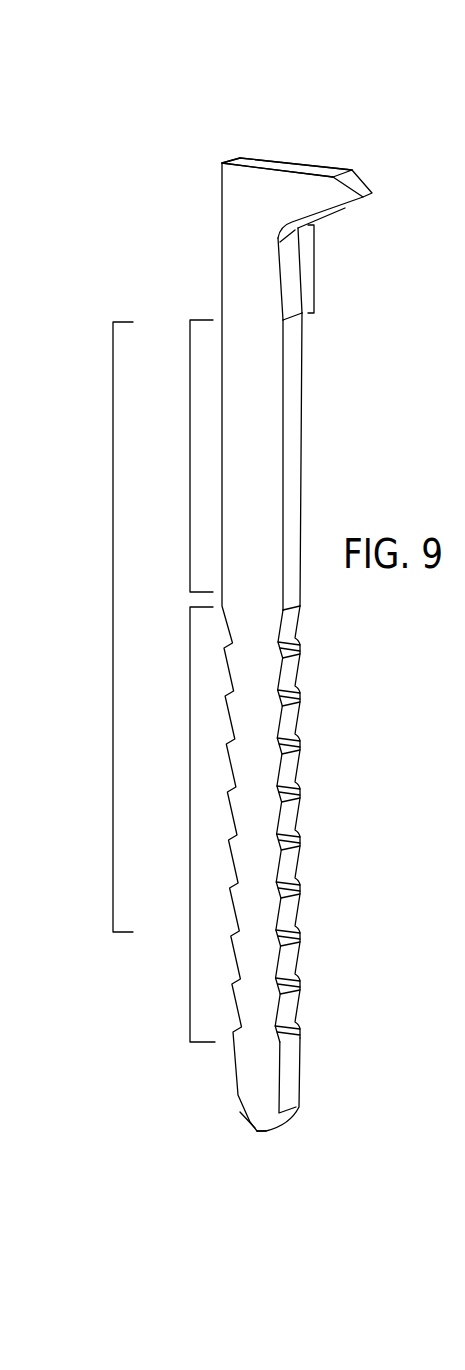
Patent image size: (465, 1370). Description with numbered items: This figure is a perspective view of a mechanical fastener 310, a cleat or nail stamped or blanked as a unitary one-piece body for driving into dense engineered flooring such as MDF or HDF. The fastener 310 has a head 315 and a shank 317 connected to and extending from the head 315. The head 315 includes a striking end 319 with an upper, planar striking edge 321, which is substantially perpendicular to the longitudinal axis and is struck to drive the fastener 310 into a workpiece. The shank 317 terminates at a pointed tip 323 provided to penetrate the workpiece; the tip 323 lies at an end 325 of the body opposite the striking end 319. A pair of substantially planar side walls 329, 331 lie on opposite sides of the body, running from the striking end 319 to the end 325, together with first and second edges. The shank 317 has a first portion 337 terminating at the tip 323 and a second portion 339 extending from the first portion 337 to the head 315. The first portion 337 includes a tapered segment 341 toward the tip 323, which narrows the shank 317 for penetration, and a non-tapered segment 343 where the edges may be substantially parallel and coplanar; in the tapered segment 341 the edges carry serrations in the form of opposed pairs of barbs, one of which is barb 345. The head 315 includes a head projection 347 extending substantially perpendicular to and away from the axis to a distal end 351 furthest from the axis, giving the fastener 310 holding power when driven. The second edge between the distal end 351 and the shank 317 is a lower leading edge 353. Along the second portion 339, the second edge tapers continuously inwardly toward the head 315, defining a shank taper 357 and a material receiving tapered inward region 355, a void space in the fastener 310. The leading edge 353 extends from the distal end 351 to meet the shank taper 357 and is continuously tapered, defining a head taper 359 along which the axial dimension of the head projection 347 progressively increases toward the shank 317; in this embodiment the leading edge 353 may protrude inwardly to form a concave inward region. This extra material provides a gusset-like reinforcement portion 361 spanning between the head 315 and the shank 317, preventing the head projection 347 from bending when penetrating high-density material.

The mechanical fastener 310 is at (124, 170).
The head 315 is at (240, 177).
The shank 317 is at (255, 445).
The striking end 319 is at (279, 121).
The striking edge 321 is at (290, 165).
The pointed tip 323 is at (250, 1122).
The end 325 is at (253, 1149).
The side wall 329 is at (262, 343).
The side wall 331 is at (300, 389).
The first portion 337 is at (113, 627).
The second portion 339 is at (314, 268).
The tapered segment 341 is at (190, 825).
The non-tapered segment 343 is at (190, 457).
The barb 345 is at (288, 770).
The head projection 347 is at (295, 185).
The distal end 351 is at (365, 196).
The lower leading edge 353 is at (333, 203).
The material receiving tapered inward region 355 is at (287, 270).
The shank taper 357 is at (282, 300).
The head taper 359 is at (340, 210).
The gusset-like reinforcement portion 361 is at (300, 212).